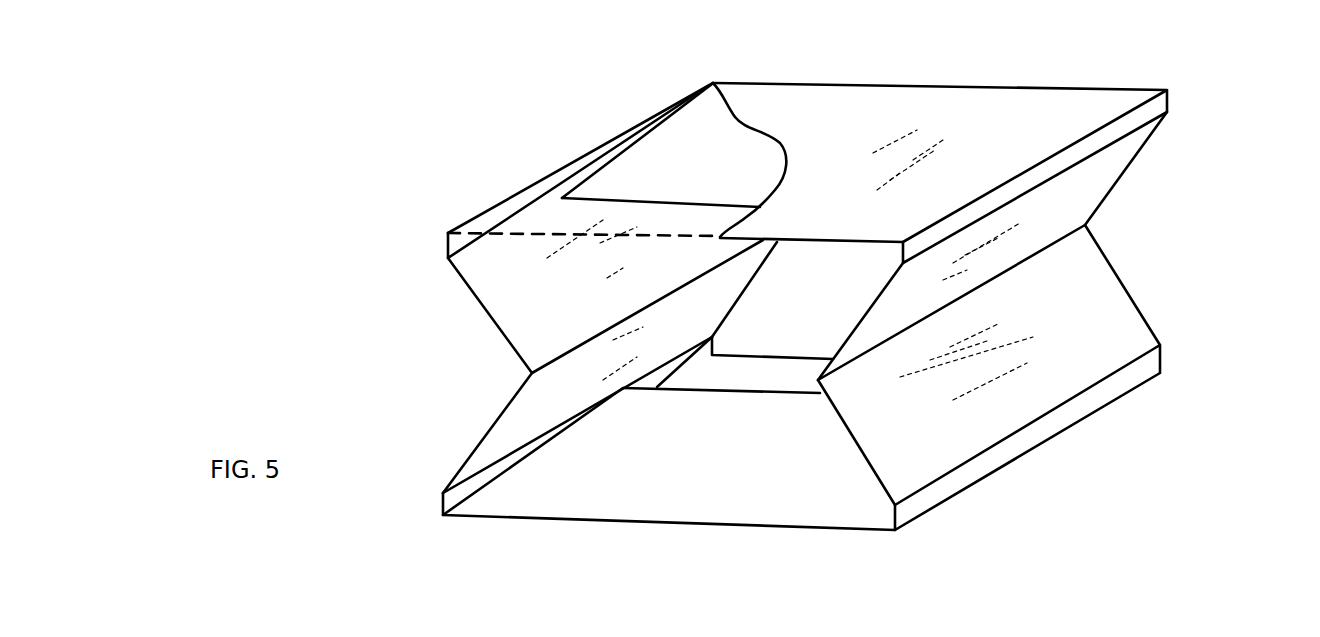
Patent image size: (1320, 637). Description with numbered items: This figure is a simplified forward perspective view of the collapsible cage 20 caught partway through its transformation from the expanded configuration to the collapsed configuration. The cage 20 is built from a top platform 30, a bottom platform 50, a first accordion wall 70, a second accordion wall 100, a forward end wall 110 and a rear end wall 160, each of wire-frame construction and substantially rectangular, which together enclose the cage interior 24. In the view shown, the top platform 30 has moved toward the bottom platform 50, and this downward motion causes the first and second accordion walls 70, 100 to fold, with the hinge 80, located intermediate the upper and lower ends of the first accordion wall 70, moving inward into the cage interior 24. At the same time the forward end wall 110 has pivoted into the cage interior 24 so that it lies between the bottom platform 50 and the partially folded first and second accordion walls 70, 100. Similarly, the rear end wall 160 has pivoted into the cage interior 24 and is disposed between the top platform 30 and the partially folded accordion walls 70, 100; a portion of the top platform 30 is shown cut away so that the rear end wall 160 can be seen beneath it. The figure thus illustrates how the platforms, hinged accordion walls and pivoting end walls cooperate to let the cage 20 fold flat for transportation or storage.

The collapsible cage 20 is at (1218, 170).
The top platform 30 is at (910, 108).
The rear end wall 160 is at (690, 143).
The second accordion wall 100 is at (485, 306).
The cage interior 24 is at (813, 300).
The bottom platform 50 is at (773, 354).
The hinge 80 is at (1085, 225).
The first accordion wall 70 is at (1113, 312).
The forward end wall 110 is at (575, 485).